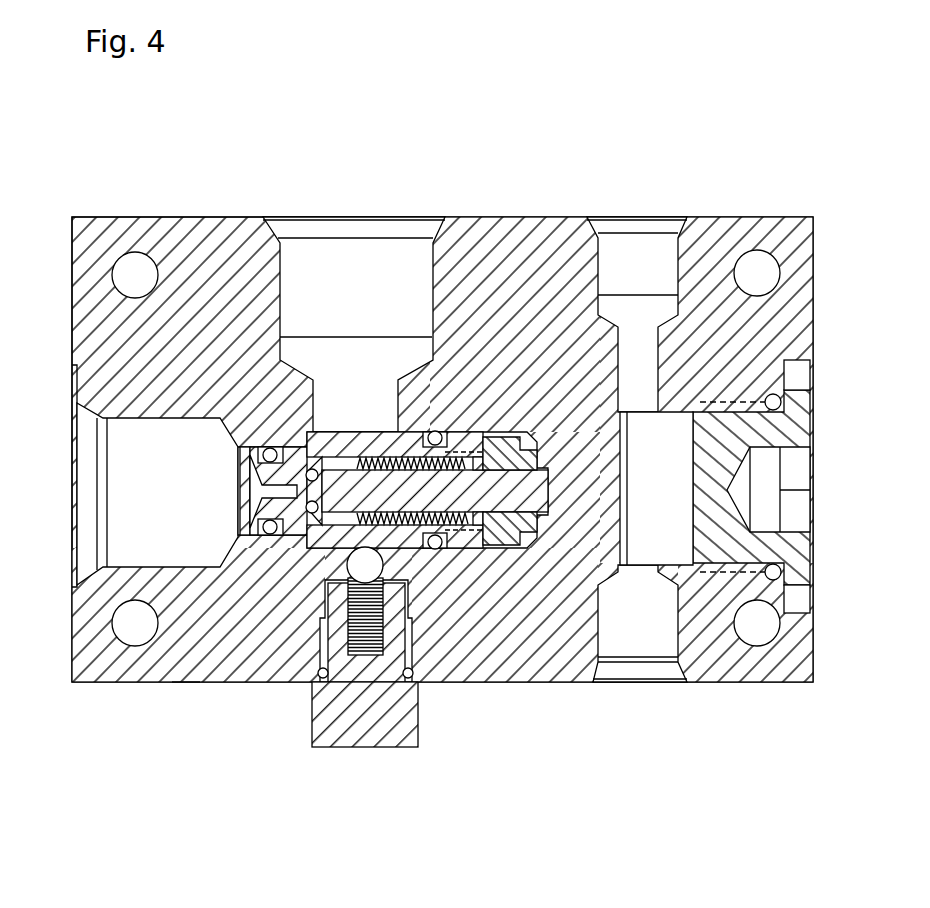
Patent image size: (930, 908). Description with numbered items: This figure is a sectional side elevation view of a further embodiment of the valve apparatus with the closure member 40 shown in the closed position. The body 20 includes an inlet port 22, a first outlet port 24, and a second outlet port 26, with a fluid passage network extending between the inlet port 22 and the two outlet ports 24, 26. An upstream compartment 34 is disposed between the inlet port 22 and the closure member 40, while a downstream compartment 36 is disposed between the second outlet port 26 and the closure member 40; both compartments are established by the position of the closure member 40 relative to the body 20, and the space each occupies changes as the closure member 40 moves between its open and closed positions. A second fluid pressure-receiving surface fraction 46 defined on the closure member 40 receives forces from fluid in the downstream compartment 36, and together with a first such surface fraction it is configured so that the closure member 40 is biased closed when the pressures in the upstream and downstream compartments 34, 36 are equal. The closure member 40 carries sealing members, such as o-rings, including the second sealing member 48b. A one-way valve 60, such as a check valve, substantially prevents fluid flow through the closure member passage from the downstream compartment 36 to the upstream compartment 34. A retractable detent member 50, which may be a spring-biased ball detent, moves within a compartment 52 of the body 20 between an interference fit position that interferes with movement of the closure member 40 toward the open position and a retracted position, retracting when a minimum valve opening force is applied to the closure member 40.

The body 20 is at (109, 217).
The inlet port 22 is at (76, 512).
The first outlet port 24 is at (356, 217).
The second outlet port 26 is at (652, 217).
The upstream compartment 34 is at (175, 500).
The downstream compartment 36 is at (671, 495).
The closure member 40 is at (298, 460).
The second fluid pressure-receiving surface fraction 46 is at (549, 445).
The second sealing member 48b is at (437, 432).
The retractable detent member 50 is at (348, 590).
The compartment 52 is at (350, 588).
The one-way valve 60 is at (174, 683).